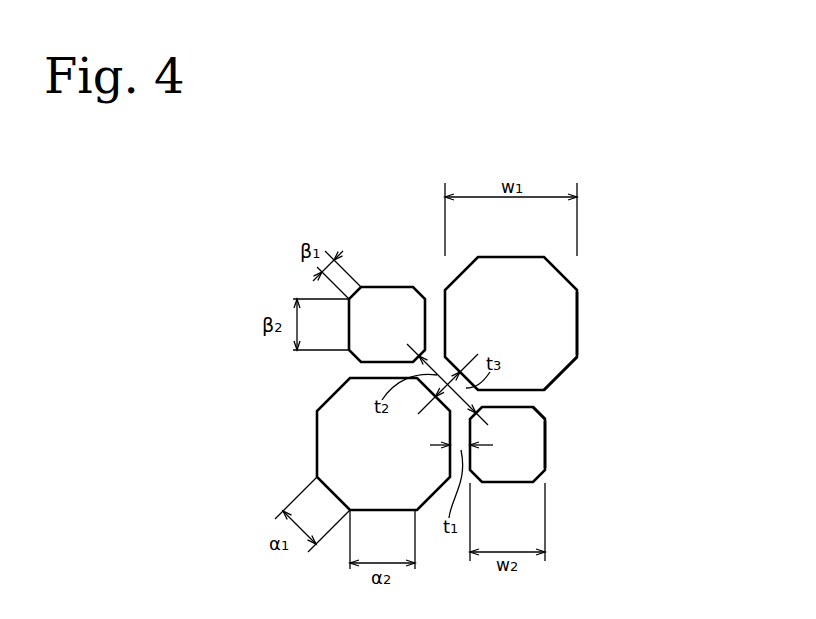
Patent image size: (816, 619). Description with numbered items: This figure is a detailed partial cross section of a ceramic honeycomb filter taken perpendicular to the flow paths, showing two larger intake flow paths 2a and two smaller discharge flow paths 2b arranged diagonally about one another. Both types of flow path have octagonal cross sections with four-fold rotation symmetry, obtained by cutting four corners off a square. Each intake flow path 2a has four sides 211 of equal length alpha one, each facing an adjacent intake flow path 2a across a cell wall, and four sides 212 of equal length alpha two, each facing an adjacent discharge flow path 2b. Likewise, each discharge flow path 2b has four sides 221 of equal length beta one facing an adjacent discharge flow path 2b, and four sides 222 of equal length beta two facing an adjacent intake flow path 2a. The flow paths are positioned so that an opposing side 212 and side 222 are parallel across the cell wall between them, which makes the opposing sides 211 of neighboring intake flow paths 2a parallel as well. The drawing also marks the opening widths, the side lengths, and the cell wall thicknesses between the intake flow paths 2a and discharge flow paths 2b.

The intake flow path 2a is at (512, 283).
The discharge flow path 2b is at (382, 307).
The side of intake flow path opposing adjacent intake flow path 211 is at (562, 373).
The side of intake flow path opposing adjacent discharge flow path 212 is at (577, 317).
The side of discharge flow path opposing adjacent discharge flow path 221 is at (540, 408).
The side of discharge flow path opposing adjacent intake flow path 222 is at (545, 445).